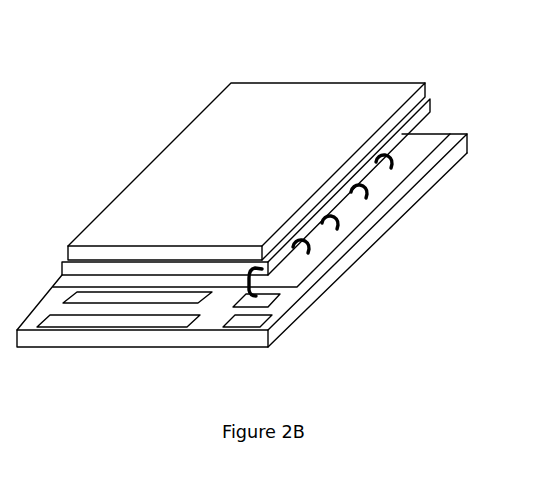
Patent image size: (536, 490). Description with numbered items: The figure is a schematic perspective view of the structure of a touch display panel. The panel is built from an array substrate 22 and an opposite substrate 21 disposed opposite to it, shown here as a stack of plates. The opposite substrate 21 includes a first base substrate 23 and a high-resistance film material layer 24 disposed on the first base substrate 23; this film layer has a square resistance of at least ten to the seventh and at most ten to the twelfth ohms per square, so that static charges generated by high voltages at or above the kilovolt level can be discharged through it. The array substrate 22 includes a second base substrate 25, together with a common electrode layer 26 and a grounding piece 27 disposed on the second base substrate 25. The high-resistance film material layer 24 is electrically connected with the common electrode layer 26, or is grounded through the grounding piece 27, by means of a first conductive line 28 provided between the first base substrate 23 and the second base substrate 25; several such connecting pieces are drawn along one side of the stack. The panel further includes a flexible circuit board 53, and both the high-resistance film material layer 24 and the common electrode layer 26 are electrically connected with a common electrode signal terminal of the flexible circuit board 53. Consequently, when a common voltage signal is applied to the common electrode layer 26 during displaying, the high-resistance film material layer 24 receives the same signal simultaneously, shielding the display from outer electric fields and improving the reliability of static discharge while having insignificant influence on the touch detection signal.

The opposite substrate 21 is at (335, 85).
The array substrate 22 is at (323, 296).
The first base substrate 23 is at (198, 167).
The high-resistance film material layer 24 is at (428, 100).
The second base substrate 25 is at (370, 240).
The common electrode layer 26 is at (433, 148).
The grounding piece 27 is at (268, 294).
The first conductive line 28 is at (393, 162).
The flexible circuit board 53 is at (105, 323).